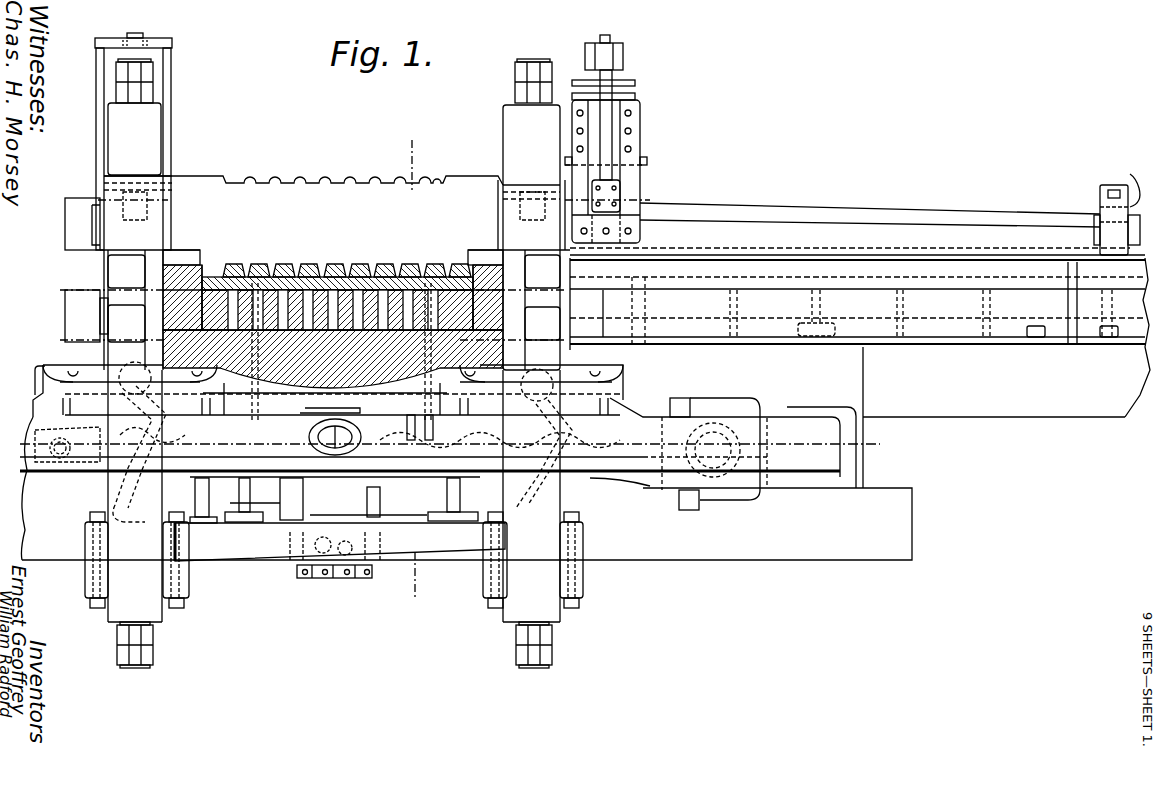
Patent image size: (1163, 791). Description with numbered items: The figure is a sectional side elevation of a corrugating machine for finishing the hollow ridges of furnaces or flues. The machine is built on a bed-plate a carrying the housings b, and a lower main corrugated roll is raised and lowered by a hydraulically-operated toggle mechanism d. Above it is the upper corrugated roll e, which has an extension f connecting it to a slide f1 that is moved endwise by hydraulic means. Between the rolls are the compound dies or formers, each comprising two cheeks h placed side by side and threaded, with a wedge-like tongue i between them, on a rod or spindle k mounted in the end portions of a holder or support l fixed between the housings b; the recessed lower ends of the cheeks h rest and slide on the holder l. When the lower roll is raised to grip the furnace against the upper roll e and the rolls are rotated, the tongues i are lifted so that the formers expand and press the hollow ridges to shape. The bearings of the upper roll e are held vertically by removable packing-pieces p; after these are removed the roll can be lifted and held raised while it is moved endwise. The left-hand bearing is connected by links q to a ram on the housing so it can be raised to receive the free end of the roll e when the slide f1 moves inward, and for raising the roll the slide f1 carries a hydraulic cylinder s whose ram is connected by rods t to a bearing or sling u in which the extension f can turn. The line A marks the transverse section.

The bed-plate a is at (586, 418).
The housings b is at (321, 363).
The hydraulically-operated toggle mechanism d is at (450, 461).
The upper corrugated roll e is at (333, 266).
The extension f is at (693, 208).
The slide f1 is at (800, 233).
The cheeks h is at (337, 281).
The wedge-like tongue i is at (283, 266).
The rod or spindle k is at (394, 266).
The holder or support l is at (333, 372).
The removable packing-pieces p is at (1131, 178).
The links q is at (183, 110).
The hydraulic cylinder s is at (623, 100).
The rods t is at (604, 140).
The bearing or sling u is at (630, 187).
The section line A A is at (303, 369).